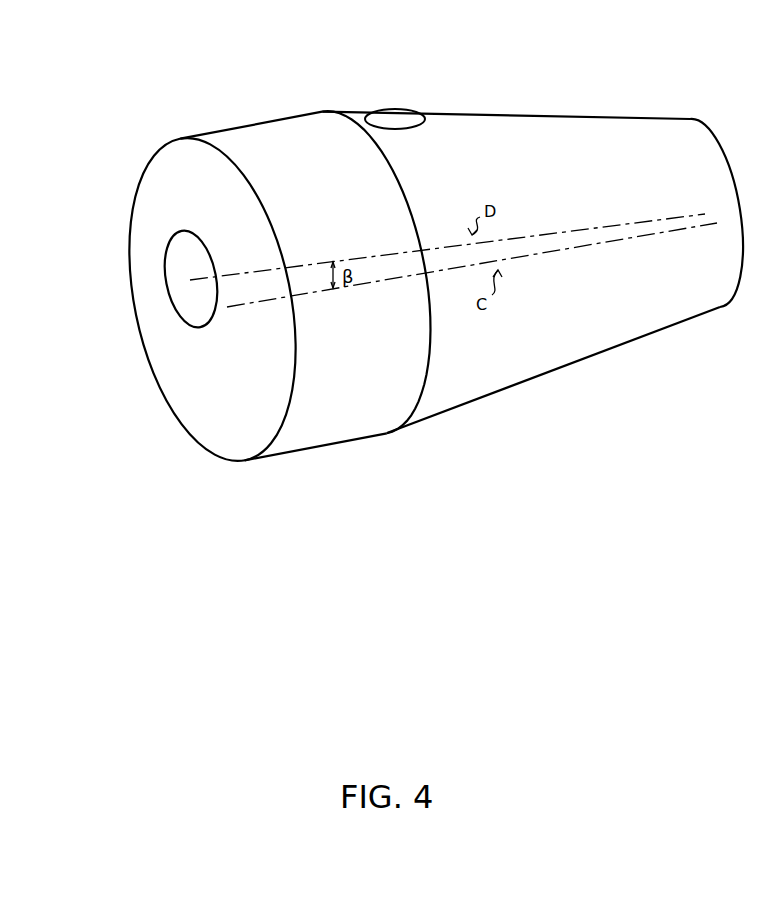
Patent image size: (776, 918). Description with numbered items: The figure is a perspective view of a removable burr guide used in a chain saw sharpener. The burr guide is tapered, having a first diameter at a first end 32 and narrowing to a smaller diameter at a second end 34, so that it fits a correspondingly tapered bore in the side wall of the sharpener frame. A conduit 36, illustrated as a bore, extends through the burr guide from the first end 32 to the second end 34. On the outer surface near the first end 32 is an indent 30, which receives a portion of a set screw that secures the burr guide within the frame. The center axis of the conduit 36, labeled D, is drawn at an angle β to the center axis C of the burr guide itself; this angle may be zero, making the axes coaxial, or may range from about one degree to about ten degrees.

The indent 30 is at (405, 117).
The first end 32 is at (142, 156).
The second end 34 is at (608, 117).
The conduit 36 is at (175, 308).